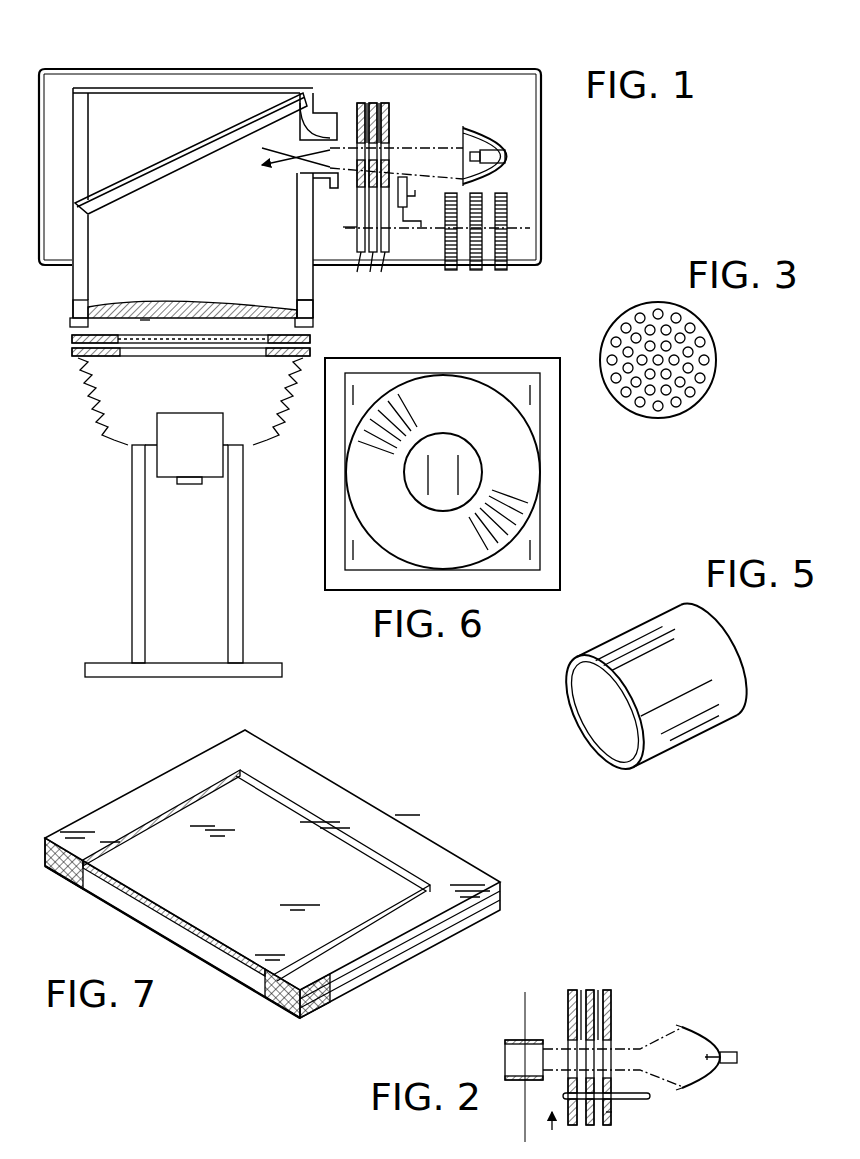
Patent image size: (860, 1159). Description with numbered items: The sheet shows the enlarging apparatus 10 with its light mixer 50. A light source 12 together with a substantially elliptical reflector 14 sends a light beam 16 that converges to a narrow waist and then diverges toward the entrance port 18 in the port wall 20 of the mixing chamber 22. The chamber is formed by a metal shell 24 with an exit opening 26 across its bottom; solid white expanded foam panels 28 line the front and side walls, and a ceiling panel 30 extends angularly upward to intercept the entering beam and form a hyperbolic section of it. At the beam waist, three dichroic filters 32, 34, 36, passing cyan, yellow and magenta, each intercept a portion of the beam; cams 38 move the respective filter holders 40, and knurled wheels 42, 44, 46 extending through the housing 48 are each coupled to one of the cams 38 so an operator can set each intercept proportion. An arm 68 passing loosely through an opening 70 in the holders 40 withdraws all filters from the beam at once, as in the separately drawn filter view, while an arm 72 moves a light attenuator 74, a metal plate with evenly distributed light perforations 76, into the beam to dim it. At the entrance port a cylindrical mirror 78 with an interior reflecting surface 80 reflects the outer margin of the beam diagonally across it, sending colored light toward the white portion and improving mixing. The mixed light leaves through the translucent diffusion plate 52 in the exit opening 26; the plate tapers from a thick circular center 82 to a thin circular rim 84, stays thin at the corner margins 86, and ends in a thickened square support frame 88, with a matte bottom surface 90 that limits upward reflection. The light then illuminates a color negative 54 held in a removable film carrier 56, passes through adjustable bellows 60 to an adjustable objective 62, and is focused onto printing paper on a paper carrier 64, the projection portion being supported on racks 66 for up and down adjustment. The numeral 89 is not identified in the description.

In FIG. 1, the enlarging apparatus 10 is at (58, 501).
In FIG. 1, the light source 12 is at (505, 152).
In FIG. 2, the light source 12 is at (717, 1063).
In FIG. 1, the elliptical reflector 14 is at (505, 141).
In FIG. 2, the elliptical reflector 14 is at (716, 1042).
In FIG. 1, the light beam 16 is at (424, 150).
In FIG. 2, the light beam 16 is at (657, 1047).
In FIG. 1, the entrance port 18 is at (326, 195).
In FIG. 1, the port wall 20 is at (341, 243).
In FIG. 1, the mixing chamber 22 is at (145, 188).
In FIG. 1, the metal shell 24 is at (215, 88).
In FIG. 1, the exit opening 26 is at (72, 305).
In FIG. 1, the expanded foam panels 28 is at (85, 137).
In FIG. 1, the ceiling panel 30 is at (181, 167).
In FIG. 1, the dichroic filter 32 is at (356, 103).
In FIG. 2, the dichroic filter 32 is at (568, 1025).
In FIG. 1, the dichroic filter 34 is at (373, 103).
In FIG. 2, the dichroic filter 34 is at (587, 1015).
In FIG. 1, the dichroic filter 36 is at (386, 103).
In FIG. 2, the dichroic filter 36 is at (612, 1018).
In FIG. 1, the cams 38 is at (367, 278).
In FIG. 1, the filter holders 40 is at (367, 103).
In FIG. 2, the filter holders 40 is at (581, 990).
In FIG. 1, the knurled wheel 42 is at (449, 270).
In FIG. 1, the knurled wheel 44 is at (476, 270).
In FIG. 1, the knurled wheel 46 is at (501, 270).
In FIG. 1, the housing 48 is at (541, 212).
In FIG. 1, the light mixer 50 is at (137, 60).
In FIG. 1, the diffusion plate 52 is at (210, 304).
In FIG. 6, the diffusion plate 52 is at (515, 350).
In FIG. 1, the color negative 54 is at (130, 350).
In FIG. 7, the color negative 54 is at (192, 827).
In FIG. 1, the film carrier 56 is at (87, 365).
In FIG. 7, the film carrier 56 is at (352, 811).
In FIG. 1, the adjustable bellows 60 is at (280, 413).
In FIG. 1, the adjustable objective 62 is at (208, 468).
In FIG. 1, the paper carrier 64 is at (170, 663).
In FIG. 1, the racks 66 is at (140, 568).
In FIG. 2, the arm 68 is at (638, 1100).
In FIG. 2, the opening 70 is at (610, 1112).
In FIG. 1, the arm 72 is at (420, 228).
In FIG. 1, the light attenuator 74 is at (420, 191).
In FIG. 3, the light attenuator 74 is at (690, 400).
In FIG. 3, the light perforations 76 is at (712, 343).
In FIG. 1, the cylindrical mirror 78 is at (279, 120).
In FIG. 5, the cylindrical mirror 78 is at (663, 633).
In FIG. 5, the interior reflecting surface 80 is at (575, 695).
In FIG. 6, the thick circular center 82 is at (478, 500).
In FIG. 6, the thin circular rim 84 is at (537, 430).
In FIG. 6, the corner margins 86 is at (362, 392).
In FIG. 6, the support frame 88 is at (560, 474).
In FIG. 1, the retaining strips 89 is at (78, 330).
In FIG. 7, the retaining strips 89 is at (328, 790).
In FIG. 1, the bottom surface 90 is at (140, 320).